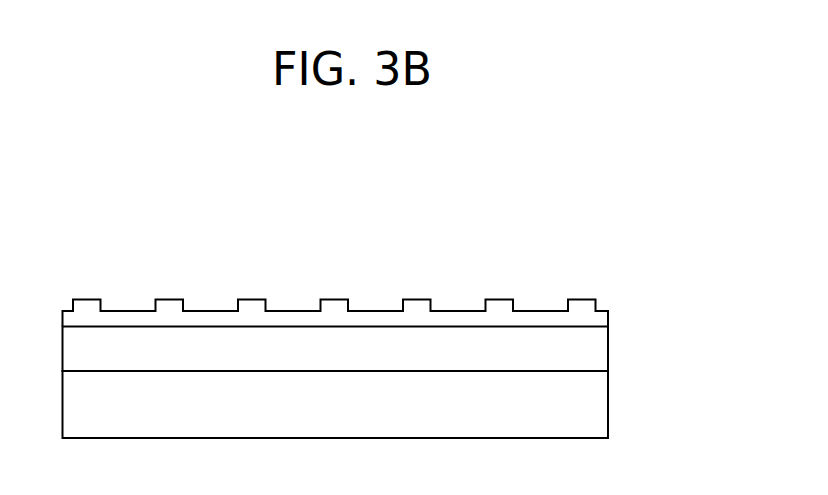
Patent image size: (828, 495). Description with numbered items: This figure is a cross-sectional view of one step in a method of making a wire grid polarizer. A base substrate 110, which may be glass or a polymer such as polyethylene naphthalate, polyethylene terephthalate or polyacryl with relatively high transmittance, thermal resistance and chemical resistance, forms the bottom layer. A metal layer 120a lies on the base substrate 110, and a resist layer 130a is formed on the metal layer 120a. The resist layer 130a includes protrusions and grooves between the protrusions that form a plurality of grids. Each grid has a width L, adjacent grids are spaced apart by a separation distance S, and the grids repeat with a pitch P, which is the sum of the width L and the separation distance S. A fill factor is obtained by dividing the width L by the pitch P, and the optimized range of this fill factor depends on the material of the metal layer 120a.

The base substrate 110 is at (601, 402).
The metal layer 120a is at (601, 348).
The resist layer 130a is at (601, 318).
The pitch P is at (73, 228).
The width L is at (100, 262).
The separation distance S is at (100, 267).